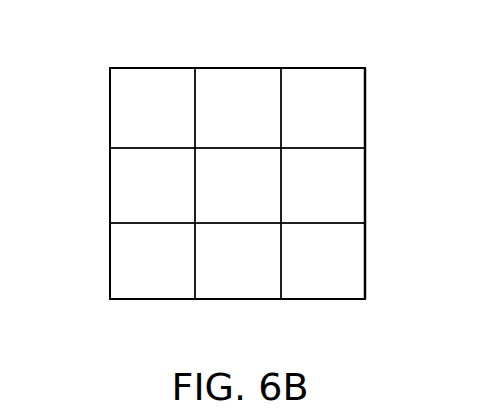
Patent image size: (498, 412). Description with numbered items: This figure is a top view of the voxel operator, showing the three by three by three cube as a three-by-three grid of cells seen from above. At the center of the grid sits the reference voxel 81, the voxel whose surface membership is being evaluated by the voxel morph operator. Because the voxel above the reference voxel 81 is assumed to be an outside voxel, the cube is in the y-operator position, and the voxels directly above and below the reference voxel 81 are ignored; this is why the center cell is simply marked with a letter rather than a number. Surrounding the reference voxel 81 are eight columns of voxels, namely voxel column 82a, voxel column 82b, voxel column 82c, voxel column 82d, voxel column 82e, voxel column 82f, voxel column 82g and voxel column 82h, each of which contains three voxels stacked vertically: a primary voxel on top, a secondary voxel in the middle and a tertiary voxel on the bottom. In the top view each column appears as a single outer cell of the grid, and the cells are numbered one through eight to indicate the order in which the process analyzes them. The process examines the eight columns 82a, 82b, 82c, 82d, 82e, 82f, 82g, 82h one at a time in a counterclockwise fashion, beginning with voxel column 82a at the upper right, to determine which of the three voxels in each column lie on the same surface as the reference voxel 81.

The reference voxel 81 is at (257, 159).
The voxel column 82a is at (318, 66).
The voxel column 82b is at (228, 66).
The voxel column 82c is at (131, 66).
The voxel column 82d is at (108, 168).
The voxel column 82e is at (108, 242).
The voxel column 82f is at (224, 300).
The voxel column 82g is at (366, 266).
The voxel column 82h is at (366, 180).